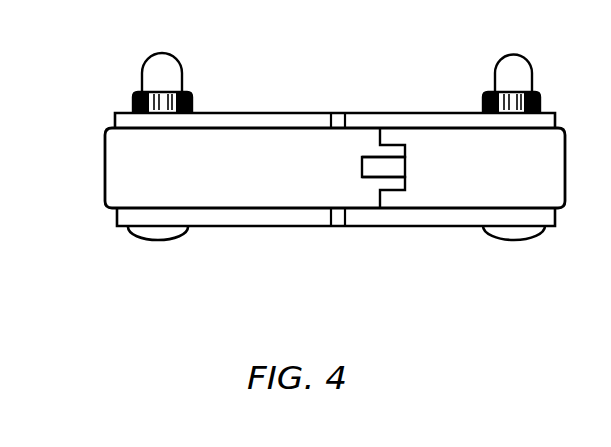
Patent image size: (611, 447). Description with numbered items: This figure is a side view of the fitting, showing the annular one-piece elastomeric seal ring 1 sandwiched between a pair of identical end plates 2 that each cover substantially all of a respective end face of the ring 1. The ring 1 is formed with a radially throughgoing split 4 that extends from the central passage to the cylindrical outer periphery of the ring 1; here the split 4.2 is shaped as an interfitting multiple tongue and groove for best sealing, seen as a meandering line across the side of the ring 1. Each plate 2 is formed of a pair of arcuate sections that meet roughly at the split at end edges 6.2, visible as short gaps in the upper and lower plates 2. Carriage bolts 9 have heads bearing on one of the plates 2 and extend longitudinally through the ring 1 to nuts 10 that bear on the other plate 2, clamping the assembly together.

The seal ring 1 is at (78, 218).
The end plates 2 is at (545, 127).
The split 4 is at (410, 168).
The split 4.2 is at (382, 158).
The end edges 6.2 is at (338, 124).
The carriage bolts 9 is at (170, 229).
The nuts 10 is at (170, 74).